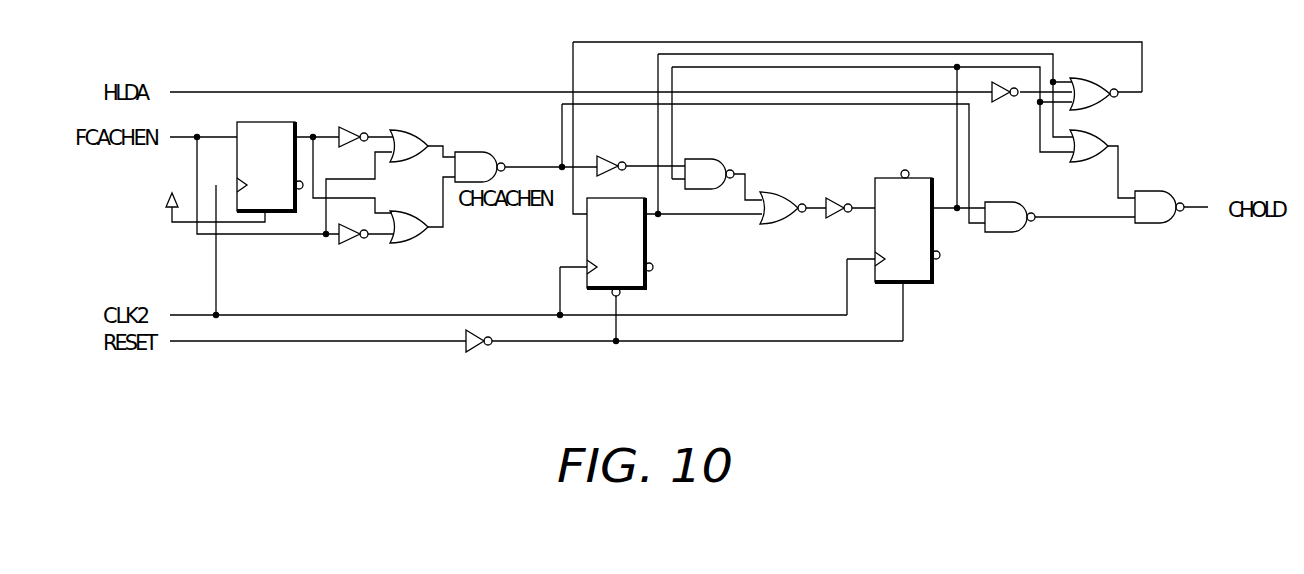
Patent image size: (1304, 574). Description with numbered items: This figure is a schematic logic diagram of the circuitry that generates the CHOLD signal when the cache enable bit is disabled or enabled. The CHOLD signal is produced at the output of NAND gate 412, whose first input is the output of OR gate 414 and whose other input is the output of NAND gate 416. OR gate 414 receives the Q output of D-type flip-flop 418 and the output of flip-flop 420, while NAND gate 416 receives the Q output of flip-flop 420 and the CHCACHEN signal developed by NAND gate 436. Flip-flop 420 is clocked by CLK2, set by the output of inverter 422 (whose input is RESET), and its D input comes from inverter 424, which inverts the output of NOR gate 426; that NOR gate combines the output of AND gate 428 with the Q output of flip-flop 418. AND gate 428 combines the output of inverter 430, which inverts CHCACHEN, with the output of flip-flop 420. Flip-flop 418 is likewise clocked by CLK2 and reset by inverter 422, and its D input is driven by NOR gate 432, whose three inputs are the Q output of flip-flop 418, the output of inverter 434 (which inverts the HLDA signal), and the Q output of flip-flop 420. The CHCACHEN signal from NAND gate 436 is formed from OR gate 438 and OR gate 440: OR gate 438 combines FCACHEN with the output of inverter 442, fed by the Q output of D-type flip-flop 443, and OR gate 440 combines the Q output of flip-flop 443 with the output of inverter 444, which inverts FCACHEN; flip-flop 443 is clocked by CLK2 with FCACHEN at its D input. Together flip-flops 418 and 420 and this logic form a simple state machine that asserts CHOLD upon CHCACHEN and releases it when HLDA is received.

The NAND gate 412 is at (1158, 193).
The OR gate 414 is at (1080, 162).
The NAND gate 416 is at (1010, 232).
The D-type flip-flop 418 is at (587, 243).
The D-type flip-flop 420 is at (925, 284).
The inverter 422 is at (468, 353).
The inverter 424 is at (832, 196).
The NOR gate 426 is at (770, 226).
The AND gate 428 is at (710, 158).
The inverter 430 is at (605, 157).
The NOR gate 432 is at (1107, 104).
The inverter 434 is at (1000, 104).
The NAND gate 436 is at (487, 152).
The OR gate 438 is at (420, 130).
The OR gate 440 is at (418, 245).
The inverter 442 is at (342, 127).
The D-type flip-flop 443 is at (265, 121).
The inverter 444 is at (345, 245).